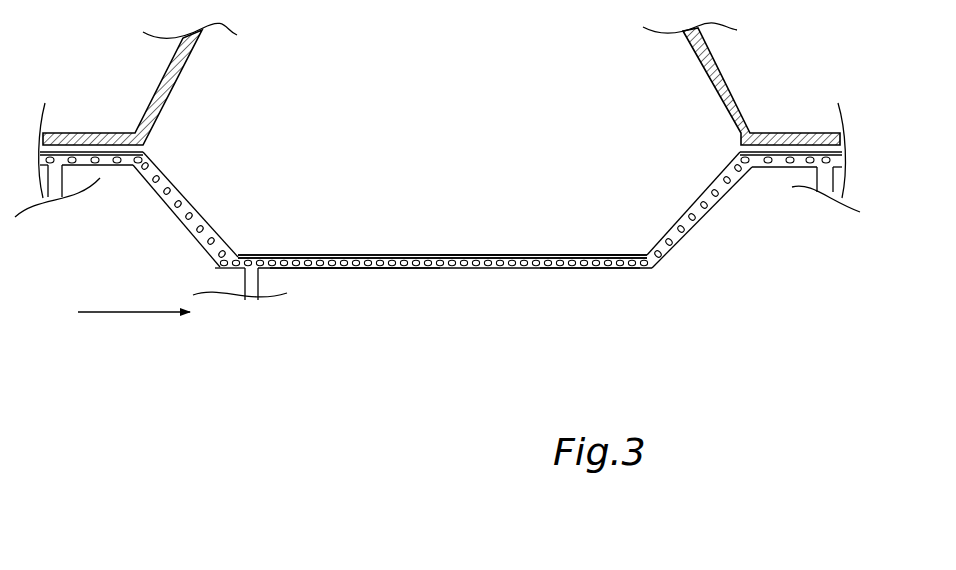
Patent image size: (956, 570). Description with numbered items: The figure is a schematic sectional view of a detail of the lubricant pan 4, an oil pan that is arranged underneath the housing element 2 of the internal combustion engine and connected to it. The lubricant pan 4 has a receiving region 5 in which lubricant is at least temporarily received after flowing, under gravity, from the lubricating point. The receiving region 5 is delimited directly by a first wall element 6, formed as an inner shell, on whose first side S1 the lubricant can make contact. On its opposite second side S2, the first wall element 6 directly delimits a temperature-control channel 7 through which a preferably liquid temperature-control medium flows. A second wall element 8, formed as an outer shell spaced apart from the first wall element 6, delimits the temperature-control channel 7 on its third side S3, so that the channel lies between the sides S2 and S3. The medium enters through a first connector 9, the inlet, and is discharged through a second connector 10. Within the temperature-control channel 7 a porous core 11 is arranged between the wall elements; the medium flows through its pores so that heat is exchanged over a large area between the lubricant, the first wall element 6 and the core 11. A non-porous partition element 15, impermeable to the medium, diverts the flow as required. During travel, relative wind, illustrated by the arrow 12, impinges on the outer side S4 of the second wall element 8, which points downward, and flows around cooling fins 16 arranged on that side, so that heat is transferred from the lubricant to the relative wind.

The housing element 2 is at (730, 85).
The lubricant pan 4 is at (495, 268).
The receiving region 5 is at (437, 212).
The first wall element 6 is at (513, 257).
The temperature-control channel 7 is at (427, 267).
The second wall element 8 is at (343, 270).
The first connector 9 is at (813, 188).
The second connector 10 is at (53, 177).
The core 11 is at (283, 255).
The arrow 12 is at (118, 313).
The partition element 15 is at (383, 270).
The cooling fins 16 is at (258, 300).
The first side S1 is at (594, 231).
The second side S2 is at (570, 268).
The third side S3 is at (343, 255).
The side S4 is at (307, 275).